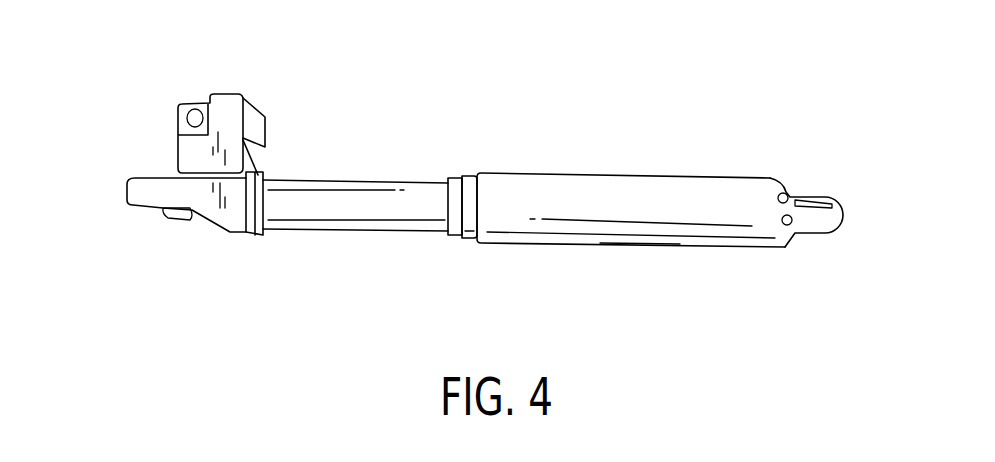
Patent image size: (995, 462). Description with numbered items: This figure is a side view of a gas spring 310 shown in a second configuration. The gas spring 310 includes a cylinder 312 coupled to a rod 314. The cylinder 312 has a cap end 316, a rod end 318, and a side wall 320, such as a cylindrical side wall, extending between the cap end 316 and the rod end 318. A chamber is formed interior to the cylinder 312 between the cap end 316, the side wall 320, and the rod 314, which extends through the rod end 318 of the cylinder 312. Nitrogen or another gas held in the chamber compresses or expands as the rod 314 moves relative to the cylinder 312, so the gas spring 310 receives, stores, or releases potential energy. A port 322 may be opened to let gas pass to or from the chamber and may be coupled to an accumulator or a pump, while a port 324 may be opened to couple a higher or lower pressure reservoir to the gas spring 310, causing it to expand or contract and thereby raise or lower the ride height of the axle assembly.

The gas spring 310 is at (584, 140).
The cylinder 312 is at (662, 213).
The rod 314 is at (341, 215).
The cap end 316 is at (803, 251).
The rod end 318 is at (467, 261).
The side wall 320 is at (638, 254).
The port 322 is at (286, 104).
The port 324 is at (777, 191).